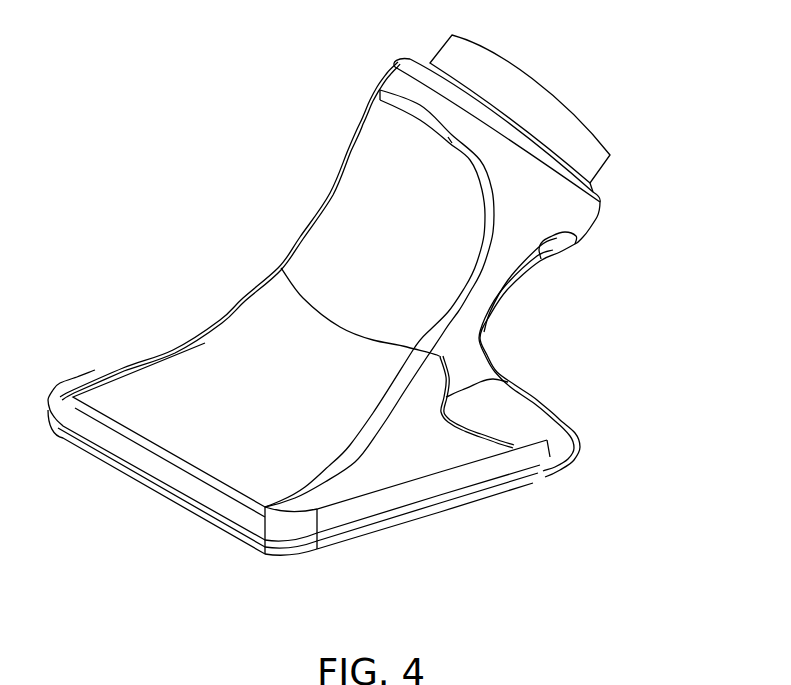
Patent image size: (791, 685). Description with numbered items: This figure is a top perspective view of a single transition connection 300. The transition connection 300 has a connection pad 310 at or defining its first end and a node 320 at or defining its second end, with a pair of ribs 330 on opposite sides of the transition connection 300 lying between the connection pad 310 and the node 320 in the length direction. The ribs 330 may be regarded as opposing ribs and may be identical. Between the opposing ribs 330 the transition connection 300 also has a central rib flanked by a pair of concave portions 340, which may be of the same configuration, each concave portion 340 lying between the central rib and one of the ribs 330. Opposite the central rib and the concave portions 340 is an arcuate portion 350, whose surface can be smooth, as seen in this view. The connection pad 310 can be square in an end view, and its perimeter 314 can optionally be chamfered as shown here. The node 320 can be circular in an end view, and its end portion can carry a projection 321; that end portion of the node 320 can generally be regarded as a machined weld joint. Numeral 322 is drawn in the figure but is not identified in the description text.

The transition connection 300 is at (168, 130).
The connection pad 310 is at (270, 532).
The perimeter 314 is at (313, 535).
The node 320 is at (598, 212).
The projection 321 is at (441, 48).
The top cap 322 is at (533, 82).
The ribs 330 is at (483, 340).
The concave portions 340 is at (492, 387).
The arcuate portion 350 is at (323, 235).